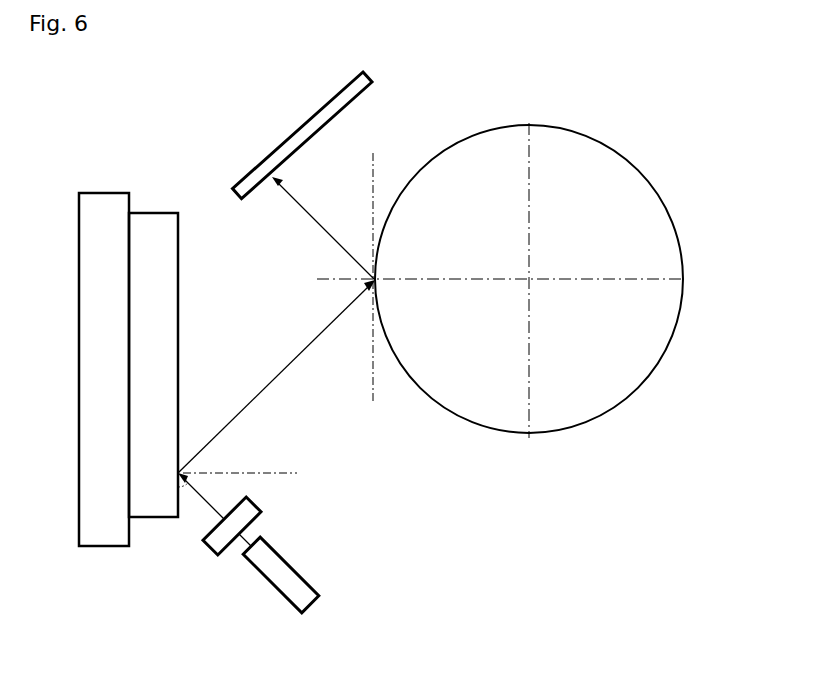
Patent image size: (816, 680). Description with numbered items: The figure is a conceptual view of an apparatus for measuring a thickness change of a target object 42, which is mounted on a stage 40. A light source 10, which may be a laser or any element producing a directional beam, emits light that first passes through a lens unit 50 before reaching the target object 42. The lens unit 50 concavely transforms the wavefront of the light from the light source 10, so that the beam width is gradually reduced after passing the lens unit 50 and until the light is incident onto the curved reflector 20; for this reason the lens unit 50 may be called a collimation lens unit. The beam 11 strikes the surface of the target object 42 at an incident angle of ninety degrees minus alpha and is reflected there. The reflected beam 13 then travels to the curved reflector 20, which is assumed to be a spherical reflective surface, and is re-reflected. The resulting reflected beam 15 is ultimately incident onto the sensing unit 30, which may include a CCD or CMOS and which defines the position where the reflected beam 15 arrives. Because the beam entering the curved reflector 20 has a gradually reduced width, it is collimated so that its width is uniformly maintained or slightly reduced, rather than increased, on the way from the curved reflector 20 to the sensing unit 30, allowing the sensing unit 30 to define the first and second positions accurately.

The light source 10 is at (298, 595).
The beam 11 is at (209, 504).
The reflected beam 13 is at (293, 372).
The reflected beam 15 is at (285, 193).
The curved reflector 20 is at (637, 362).
The sensing unit 30 is at (364, 76).
The stage 40 is at (100, 309).
The target object 42 is at (143, 378).
The lens unit 50 is at (245, 513).